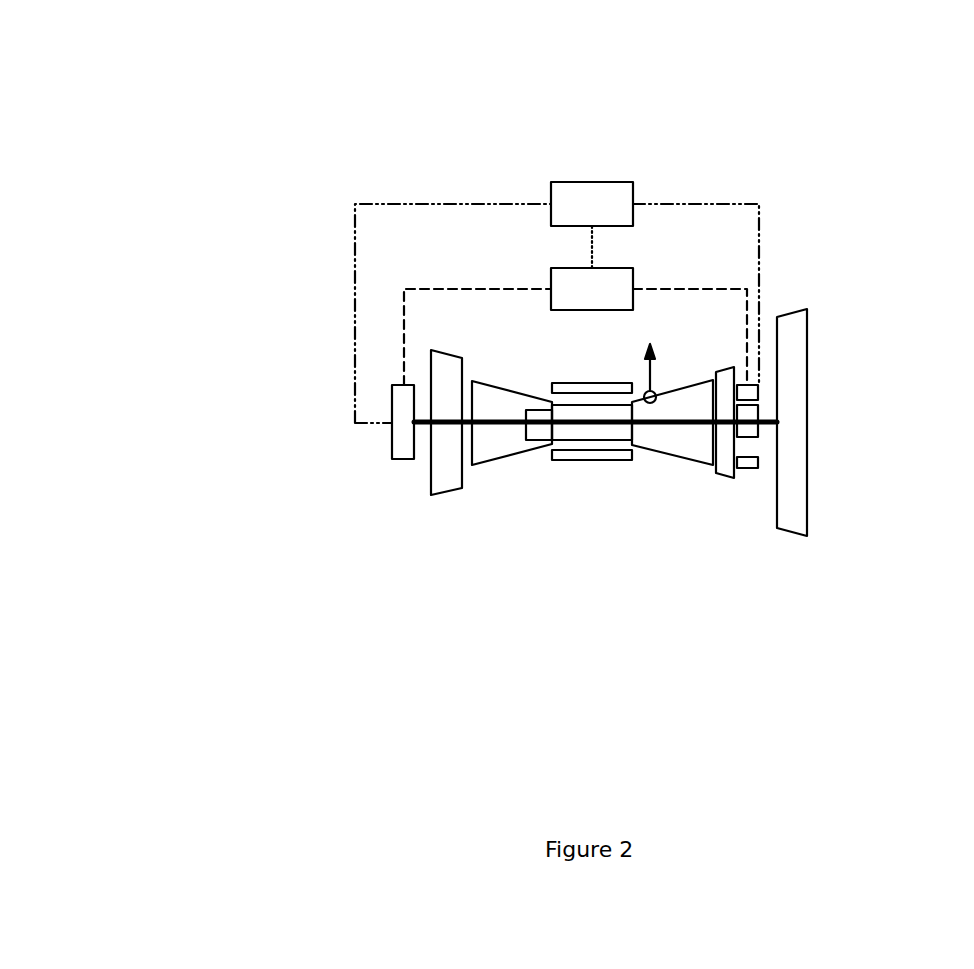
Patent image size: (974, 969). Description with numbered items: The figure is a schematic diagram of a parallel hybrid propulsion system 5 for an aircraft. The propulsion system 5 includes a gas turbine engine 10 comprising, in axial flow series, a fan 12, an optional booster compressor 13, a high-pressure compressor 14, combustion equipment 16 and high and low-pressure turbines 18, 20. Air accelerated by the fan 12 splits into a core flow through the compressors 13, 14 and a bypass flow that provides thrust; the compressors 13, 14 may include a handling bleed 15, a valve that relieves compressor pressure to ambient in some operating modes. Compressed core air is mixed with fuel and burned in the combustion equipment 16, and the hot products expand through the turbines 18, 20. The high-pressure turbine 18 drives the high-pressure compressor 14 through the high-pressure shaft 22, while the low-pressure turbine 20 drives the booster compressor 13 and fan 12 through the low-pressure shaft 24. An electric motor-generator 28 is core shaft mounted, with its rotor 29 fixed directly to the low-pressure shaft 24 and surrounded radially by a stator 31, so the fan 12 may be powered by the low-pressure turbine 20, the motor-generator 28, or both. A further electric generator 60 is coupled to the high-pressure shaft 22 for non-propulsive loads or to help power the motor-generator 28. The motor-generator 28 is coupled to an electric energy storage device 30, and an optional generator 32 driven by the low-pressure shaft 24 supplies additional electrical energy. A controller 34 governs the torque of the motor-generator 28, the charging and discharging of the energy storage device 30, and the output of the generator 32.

The propulsion system 5 is at (253, 357).
The gas turbine engine 10 is at (517, 342).
The fan 12 is at (807, 340).
The booster compressor 13 is at (725, 475).
The high-pressure compressor 14 is at (670, 460).
The handling bleed 15 is at (647, 390).
The combustion equipment 16 is at (610, 465).
The high-pressure turbine 18 is at (485, 465).
The low-pressure turbine 20 is at (447, 493).
The high-pressure shaft 22 is at (560, 465).
The low-pressure shaft 24 is at (675, 418).
The electric motor-generator 28 is at (750, 502).
The rotor 29 is at (750, 403).
The electric energy storage device 30 is at (633, 289).
The stator 31 is at (758, 462).
The generator 32 is at (403, 459).
The controller 34 is at (593, 183).
The further electric generator 60 is at (540, 442).